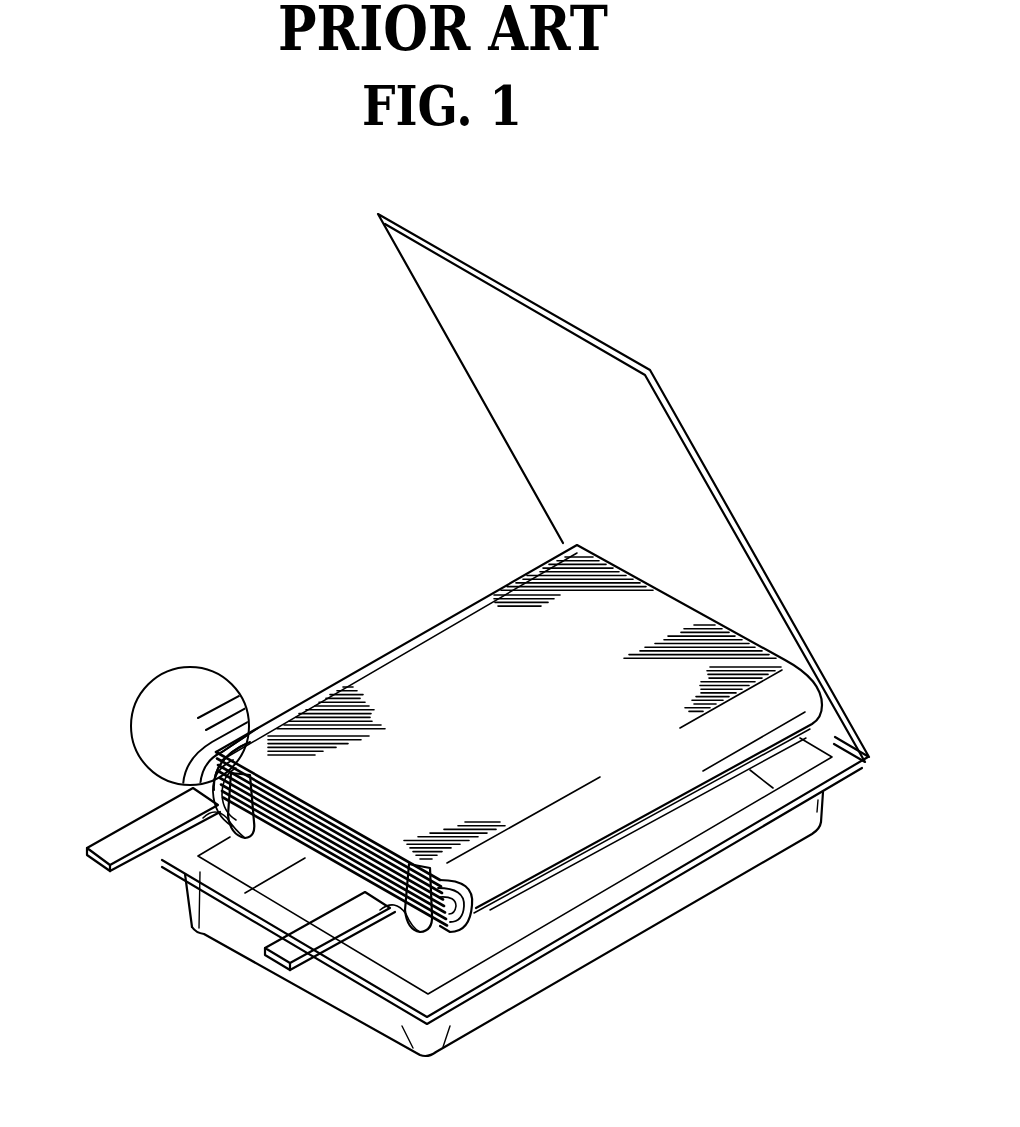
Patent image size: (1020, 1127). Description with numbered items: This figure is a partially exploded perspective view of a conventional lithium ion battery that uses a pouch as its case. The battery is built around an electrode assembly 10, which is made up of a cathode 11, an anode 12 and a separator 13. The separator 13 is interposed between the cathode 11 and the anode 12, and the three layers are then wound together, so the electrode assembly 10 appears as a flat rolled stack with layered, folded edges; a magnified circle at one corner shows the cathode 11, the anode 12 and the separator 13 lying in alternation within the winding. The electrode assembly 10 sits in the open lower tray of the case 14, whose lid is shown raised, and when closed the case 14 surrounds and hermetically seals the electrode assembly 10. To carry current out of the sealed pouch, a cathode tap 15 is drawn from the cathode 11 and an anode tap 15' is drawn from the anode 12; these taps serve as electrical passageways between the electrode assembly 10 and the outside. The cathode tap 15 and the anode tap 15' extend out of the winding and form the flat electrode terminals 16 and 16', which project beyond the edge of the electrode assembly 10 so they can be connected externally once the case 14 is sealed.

The electrode assembly 10 is at (396, 643).
The cathode 11 is at (203, 720).
The anode 12 is at (210, 763).
The separator 13 is at (203, 750).
The case 14 is at (657, 915).
The cathode tap 15 is at (293, 801).
The anode tap 15' is at (417, 846).
The electrode terminal 16 is at (128, 813).
The electrode terminal 16' is at (311, 975).